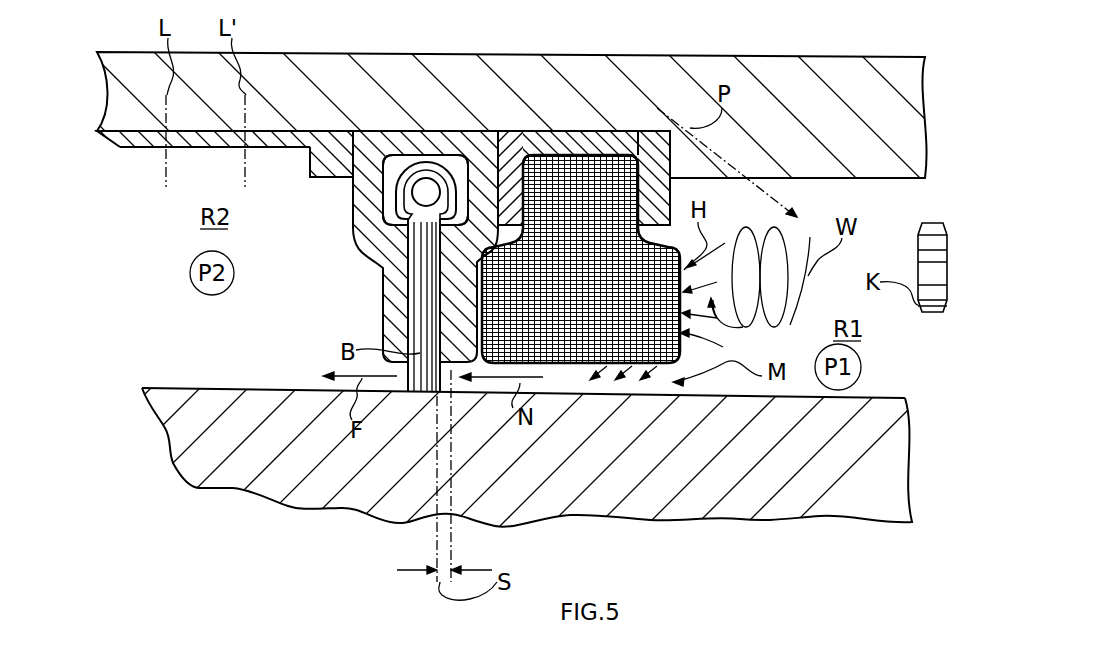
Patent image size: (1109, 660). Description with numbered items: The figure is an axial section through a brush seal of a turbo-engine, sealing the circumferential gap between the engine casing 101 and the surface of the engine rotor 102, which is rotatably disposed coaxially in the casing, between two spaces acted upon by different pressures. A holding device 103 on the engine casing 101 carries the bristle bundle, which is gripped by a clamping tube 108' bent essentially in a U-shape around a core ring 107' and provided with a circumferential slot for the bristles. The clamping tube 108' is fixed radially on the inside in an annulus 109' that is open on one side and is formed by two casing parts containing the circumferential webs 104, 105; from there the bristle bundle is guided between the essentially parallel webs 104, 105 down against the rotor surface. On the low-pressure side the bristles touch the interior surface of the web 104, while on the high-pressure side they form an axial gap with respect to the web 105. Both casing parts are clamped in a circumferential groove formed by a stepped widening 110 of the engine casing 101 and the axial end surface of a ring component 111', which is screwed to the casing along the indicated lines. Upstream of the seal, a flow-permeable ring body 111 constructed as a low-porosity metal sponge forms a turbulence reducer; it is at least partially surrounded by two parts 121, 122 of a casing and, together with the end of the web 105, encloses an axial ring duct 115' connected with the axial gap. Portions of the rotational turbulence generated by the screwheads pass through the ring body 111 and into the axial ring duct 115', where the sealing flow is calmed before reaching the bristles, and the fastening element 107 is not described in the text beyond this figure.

The engine casing 101 is at (857, 82).
The engine rotor 102 is at (177, 450).
The holding device 103 is at (447, 150).
The web 104 is at (388, 270).
The web 105 is at (472, 326).
The fastening element 107 is at (605, 78).
The core ring 107' is at (407, 136).
The clamping tube 108' is at (553, 160).
The annulus 109' is at (379, 191).
The cover plate 110 is at (99, 132).
The ring body 111 is at (581, 219).
The ring component 111' is at (211, 171).
The axial ring duct 115' is at (523, 430).
The casing part 121 is at (522, 133).
The casing part 122 is at (612, 133).